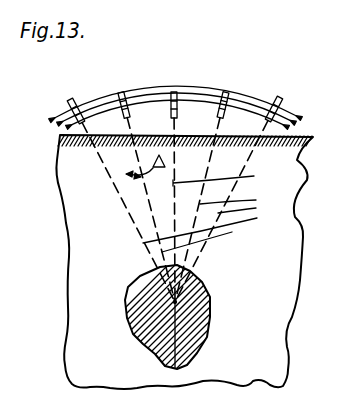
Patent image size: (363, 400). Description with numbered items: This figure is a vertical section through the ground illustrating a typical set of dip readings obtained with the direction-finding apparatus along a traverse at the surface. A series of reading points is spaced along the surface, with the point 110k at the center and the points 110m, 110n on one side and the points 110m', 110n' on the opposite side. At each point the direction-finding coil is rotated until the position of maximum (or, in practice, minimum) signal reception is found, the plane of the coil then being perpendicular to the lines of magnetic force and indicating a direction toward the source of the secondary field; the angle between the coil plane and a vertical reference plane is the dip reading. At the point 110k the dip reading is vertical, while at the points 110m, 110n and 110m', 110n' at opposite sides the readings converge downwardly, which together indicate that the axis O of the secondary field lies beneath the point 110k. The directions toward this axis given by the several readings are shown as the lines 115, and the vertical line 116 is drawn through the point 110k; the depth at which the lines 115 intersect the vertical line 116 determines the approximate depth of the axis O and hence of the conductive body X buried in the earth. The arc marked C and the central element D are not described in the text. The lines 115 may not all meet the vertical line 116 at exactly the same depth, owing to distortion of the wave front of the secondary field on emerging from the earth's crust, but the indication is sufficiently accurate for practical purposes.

The point 110n is at (115, 182).
The point 110m is at (150, 178).
The central transducer D is at (180, 92).
The point 110k is at (204, 95).
The point 110m' is at (302, 63).
The point 110n' is at (257, 192).
The arcuate transducer array path C is at (100, 97).
The vertical line 116 is at (225, 179).
The lines 115 is at (210, 222).
The axis of the secondary field O is at (178, 302).
The ore body X is at (188, 348).